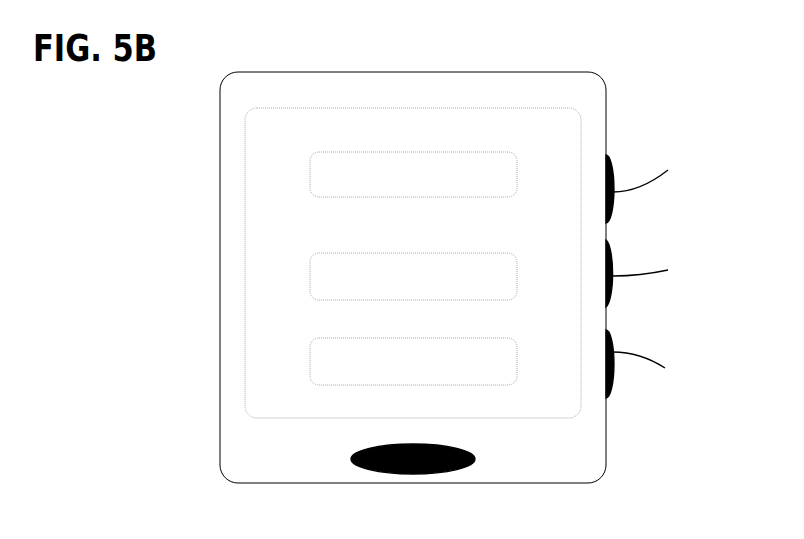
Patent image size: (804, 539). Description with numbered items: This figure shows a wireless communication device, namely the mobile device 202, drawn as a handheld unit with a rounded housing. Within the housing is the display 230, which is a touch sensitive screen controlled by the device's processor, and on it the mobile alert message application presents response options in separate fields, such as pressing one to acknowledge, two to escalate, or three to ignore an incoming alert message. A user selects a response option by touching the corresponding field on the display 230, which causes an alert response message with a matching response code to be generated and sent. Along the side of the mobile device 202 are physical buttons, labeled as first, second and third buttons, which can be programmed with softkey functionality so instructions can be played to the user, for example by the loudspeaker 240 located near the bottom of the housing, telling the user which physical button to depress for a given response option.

The mobile device 202 is at (432, 72).
The display 230 is at (531, 108).
The loudspeaker 240 is at (470, 503).